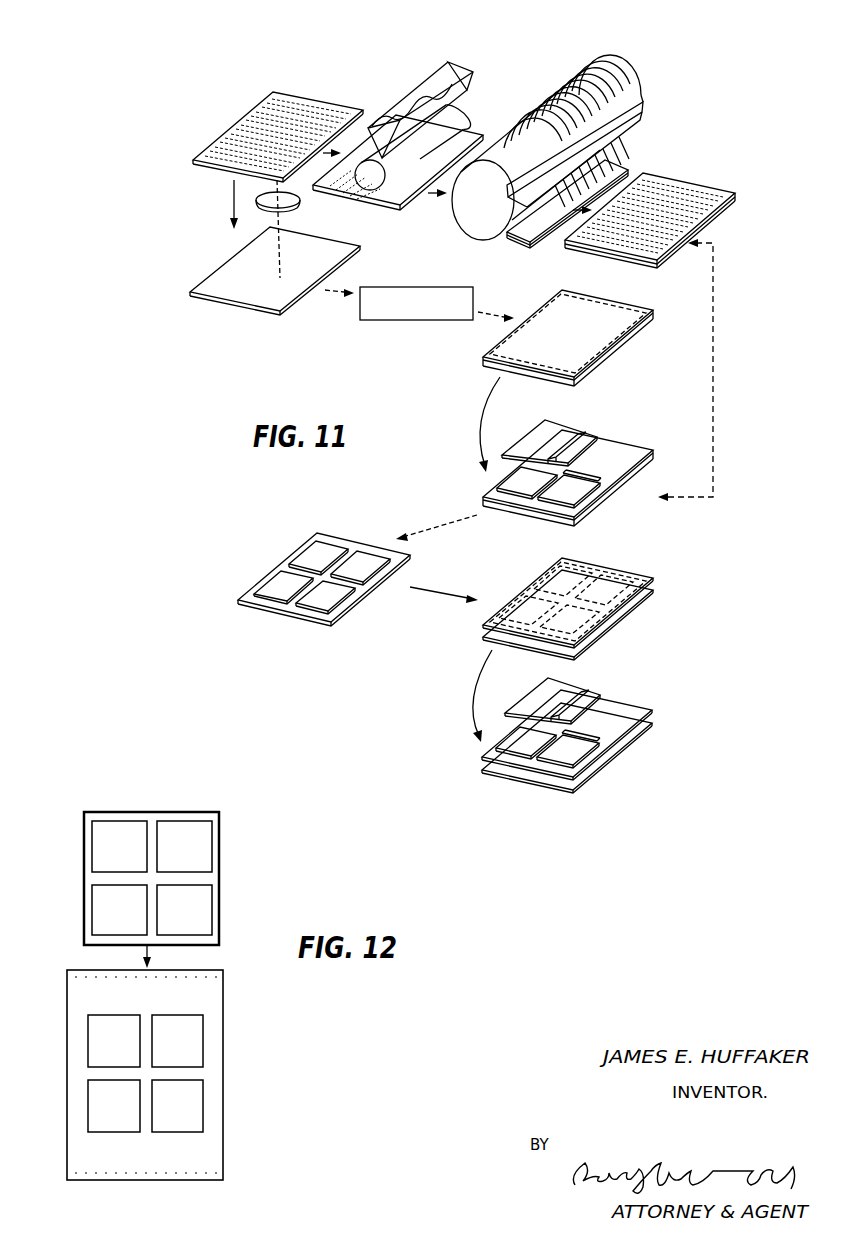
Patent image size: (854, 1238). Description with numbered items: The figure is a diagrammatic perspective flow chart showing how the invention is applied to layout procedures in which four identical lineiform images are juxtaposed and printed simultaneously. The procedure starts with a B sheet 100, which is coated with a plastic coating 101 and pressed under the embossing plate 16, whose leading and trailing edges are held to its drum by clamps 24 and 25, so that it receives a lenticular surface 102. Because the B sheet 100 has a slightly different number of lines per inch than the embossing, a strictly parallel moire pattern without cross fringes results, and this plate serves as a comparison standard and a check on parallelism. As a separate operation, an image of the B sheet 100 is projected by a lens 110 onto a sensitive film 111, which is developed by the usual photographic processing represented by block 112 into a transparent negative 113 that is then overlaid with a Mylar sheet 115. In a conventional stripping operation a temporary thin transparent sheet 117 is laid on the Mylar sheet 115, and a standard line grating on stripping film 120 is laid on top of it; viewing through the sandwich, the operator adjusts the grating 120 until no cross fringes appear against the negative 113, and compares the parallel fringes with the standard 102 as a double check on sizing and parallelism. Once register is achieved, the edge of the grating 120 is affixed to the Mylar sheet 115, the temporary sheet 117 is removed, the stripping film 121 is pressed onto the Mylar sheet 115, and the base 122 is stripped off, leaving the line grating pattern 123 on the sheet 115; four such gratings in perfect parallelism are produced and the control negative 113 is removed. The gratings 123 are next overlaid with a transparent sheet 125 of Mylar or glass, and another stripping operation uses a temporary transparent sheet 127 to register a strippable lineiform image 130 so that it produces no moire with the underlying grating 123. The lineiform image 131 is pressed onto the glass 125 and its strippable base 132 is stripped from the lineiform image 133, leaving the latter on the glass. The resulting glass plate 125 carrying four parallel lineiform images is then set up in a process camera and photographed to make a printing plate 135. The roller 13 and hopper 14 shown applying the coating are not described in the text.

In FIG. 11, the B sheet 100 is at (308, 105).
In FIG. 11, the lens 110 is at (300, 203).
In FIG. 11, the sensitive film 111 is at (242, 295).
In FIG. 11, the photographic processing block 112 is at (407, 288).
In FIG. 11, the plastic coating 101 is at (392, 197).
In FIG. 11, the applicator roller 13 is at (452, 113).
In FIG. 11, the powder hopper 14 is at (462, 67).
In FIG. 11, the embossing plate 16 is at (587, 77).
In FIG. 11, the clamp 25 is at (637, 77).
In FIG. 11, the clamp 24 is at (643, 100).
In FIG. 11, the lenticular surface 102 is at (607, 165).
In FIG. 11, the transparent negative 113 is at (640, 337).
In FIG. 11, the Mylar sheet 115 is at (633, 305).
In FIG. 11, the temporary transparent sheet 117 is at (535, 430).
In FIG. 11, the line grating on stripping film 120 is at (570, 435).
In FIG. 11, the stripping film 121 is at (508, 500).
In FIG. 11, the base of stripping film 122 is at (582, 477).
In FIG. 11, the line grating pattern 123 is at (582, 492).
In FIG. 11, the transparent sheet 125 is at (637, 575).
In FIG. 12, the transparent sheet 125 is at (125, 810).
In FIG. 11, the temporary transparent sheet 127 is at (542, 690).
In FIG. 11, the strippable lineiform image 130 is at (577, 703).
In FIG. 11, the lineiform image 131 is at (518, 747).
In FIG. 11, the strippable base 132 is at (583, 737).
In FIG. 11, the lineiform image 133 is at (587, 753).
In FIG. 12, the lineiform image 133 is at (97, 900).
In FIG. 12, the printing plate 135 is at (215, 1008).